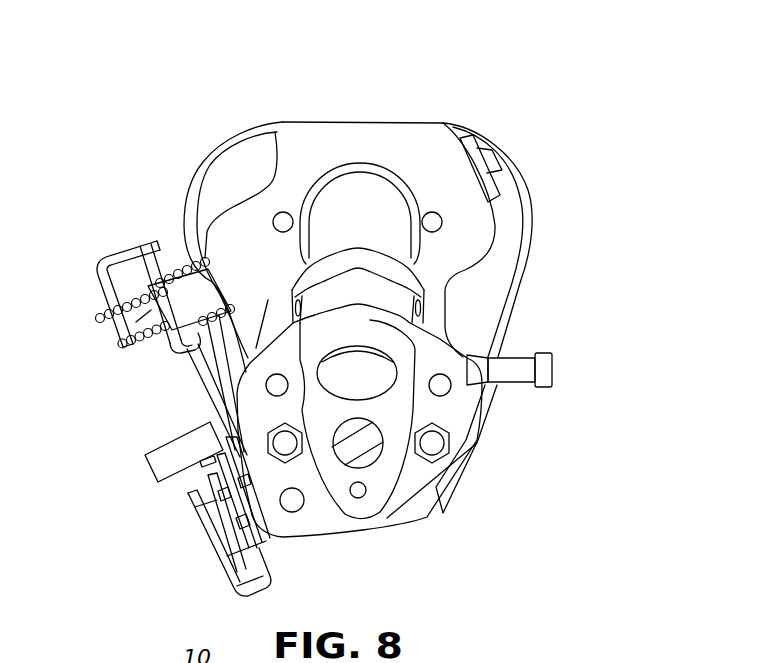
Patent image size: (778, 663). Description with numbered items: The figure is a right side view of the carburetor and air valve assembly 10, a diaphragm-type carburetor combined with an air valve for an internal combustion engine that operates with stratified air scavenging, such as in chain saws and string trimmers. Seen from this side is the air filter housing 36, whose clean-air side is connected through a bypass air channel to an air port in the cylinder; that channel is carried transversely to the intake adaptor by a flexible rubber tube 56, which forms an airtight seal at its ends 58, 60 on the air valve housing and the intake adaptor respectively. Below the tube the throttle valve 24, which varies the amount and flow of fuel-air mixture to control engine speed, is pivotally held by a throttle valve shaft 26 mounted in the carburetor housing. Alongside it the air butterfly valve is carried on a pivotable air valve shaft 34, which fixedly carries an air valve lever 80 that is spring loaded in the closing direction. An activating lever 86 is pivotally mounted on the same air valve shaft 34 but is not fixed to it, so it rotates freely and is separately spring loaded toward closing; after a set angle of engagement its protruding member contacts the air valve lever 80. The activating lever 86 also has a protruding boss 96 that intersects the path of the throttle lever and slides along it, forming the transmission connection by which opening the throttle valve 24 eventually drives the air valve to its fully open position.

The carburetor and air valve assembly 10 is at (229, 99).
The throttle valve 24 is at (378, 459).
The throttle valve shaft 26 is at (248, 507).
The air valve shaft 34 is at (127, 345).
The air filter housing 36 is at (522, 170).
The rubber tube 56 is at (367, 193).
The end of rubber tube 58 is at (330, 166).
The end of rubber tube 60 is at (450, 272).
The air valve lever 80 is at (104, 297).
The activating lever 86 is at (205, 390).
The protruding boss 96 is at (145, 466).